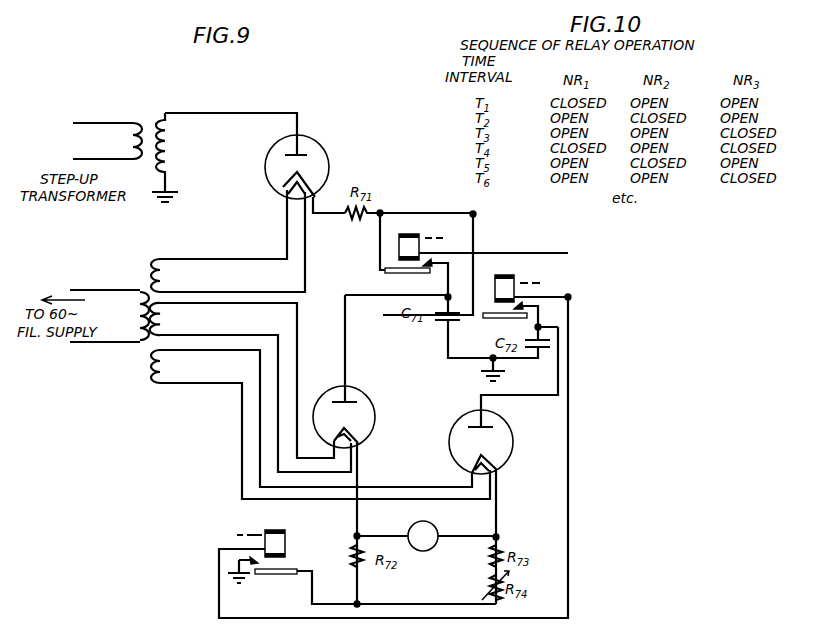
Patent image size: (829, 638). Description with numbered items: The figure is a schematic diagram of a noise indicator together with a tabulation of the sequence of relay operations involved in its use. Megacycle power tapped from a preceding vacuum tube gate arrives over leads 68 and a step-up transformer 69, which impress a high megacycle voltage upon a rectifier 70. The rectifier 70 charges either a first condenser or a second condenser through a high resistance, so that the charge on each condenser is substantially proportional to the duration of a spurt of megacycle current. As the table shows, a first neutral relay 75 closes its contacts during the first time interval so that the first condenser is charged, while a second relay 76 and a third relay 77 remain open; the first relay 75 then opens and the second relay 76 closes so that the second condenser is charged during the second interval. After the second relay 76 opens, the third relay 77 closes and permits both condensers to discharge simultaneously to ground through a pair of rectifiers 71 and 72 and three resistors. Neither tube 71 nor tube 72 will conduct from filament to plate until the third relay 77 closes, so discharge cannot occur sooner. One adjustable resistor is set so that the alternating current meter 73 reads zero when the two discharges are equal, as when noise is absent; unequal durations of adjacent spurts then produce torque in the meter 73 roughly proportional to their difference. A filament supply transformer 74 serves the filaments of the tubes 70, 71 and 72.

The leads 68 is at (100, 160).
The step-up transformer 69 is at (153, 122).
The rectifier 70 is at (320, 146).
The rectifier 71 is at (372, 409).
The rectifier 72 is at (505, 429).
The A.C. meter 73 is at (438, 526).
The filament supply transformer 74 is at (150, 346).
The relay NR1 75 is at (428, 228).
The relay NR2 76 is at (517, 278).
The relay NR3 77 is at (263, 529).